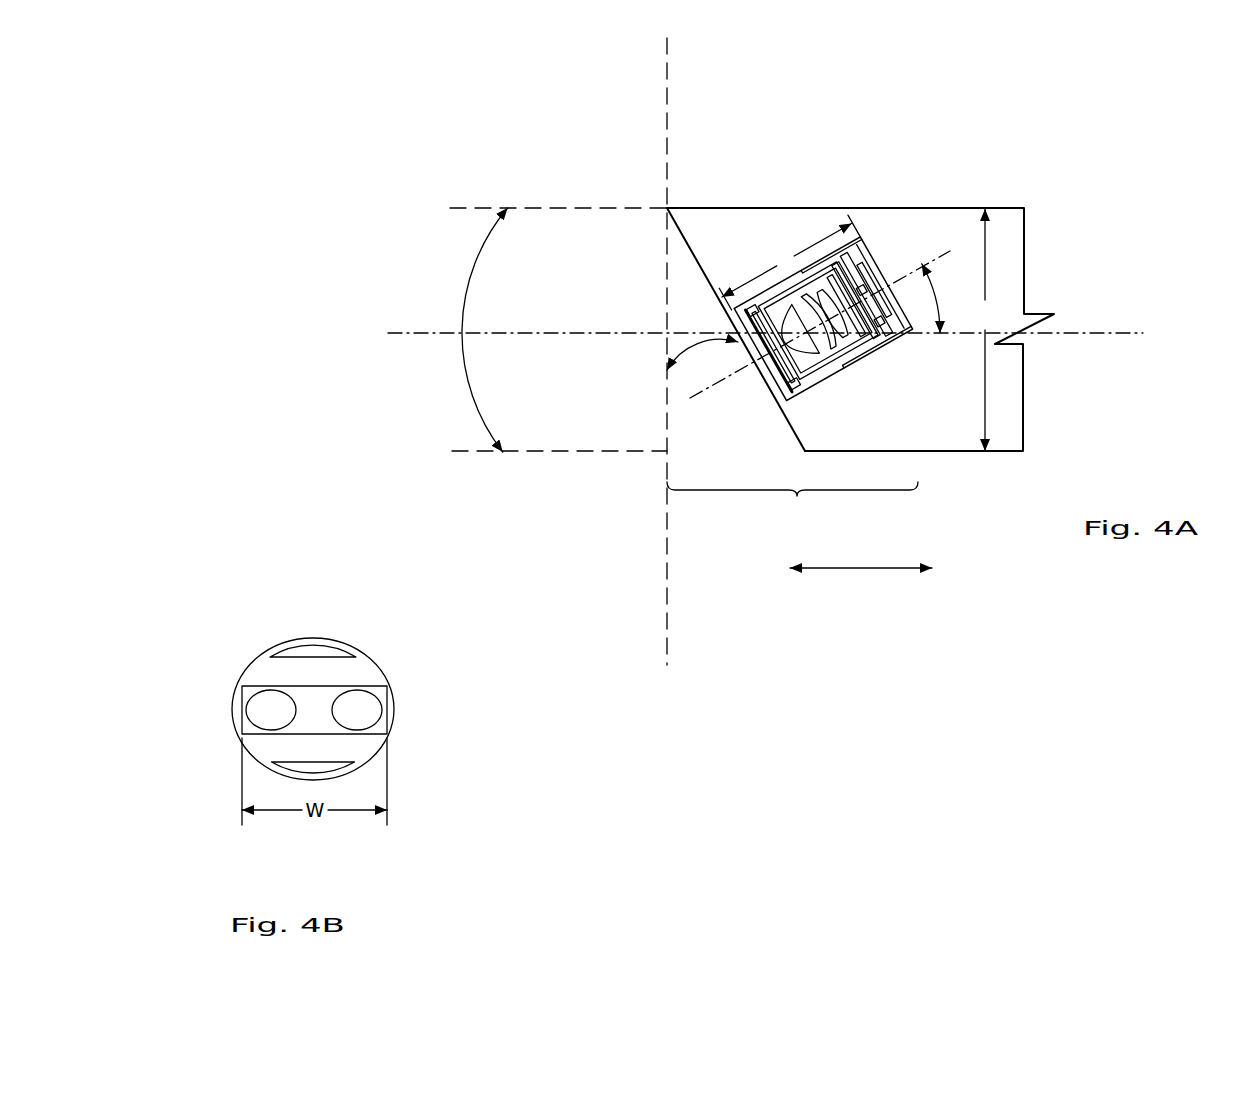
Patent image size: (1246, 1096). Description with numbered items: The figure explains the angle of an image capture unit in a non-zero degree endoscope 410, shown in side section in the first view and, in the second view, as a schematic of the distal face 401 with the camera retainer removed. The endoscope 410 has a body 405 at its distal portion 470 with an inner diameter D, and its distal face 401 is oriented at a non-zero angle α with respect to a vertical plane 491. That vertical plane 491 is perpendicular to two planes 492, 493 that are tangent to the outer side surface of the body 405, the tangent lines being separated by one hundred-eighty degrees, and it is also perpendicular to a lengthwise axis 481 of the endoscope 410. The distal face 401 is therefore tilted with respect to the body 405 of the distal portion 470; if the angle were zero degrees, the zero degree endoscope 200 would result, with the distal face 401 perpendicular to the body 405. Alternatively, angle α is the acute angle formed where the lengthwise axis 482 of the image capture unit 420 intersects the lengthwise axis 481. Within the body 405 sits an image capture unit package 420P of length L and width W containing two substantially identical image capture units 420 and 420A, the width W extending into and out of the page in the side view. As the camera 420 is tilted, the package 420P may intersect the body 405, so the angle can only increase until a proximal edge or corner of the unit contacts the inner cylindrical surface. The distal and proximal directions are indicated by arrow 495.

In FIG. 4A, the zero degree endoscope 200 is at (333, 457).
In FIG. 4A, the distal face 401 is at (687, 329).
In FIG. 4B, the distal face 401 is at (300, 671).
In FIG. 4A, the body 405 is at (860, 300).
In FIG. 4A, the non-zero degree endoscope 410 is at (896, 240).
In FIG. 4A, the image capture unit 420 is at (815, 327).
In FIG. 4B, the image capture unit 420 is at (405, 679).
In FIG. 4B, the image capture unit 420A is at (231, 678).
In FIG. 4B, the image capture unit package 420P is at (331, 639).
In FIG. 4A, the distal portion 470 is at (792, 505).
In FIG. 4A, the lengthwise axis 481 is at (1100, 319).
In FIG. 4A, the lengthwise axis 482 is at (908, 260).
In FIG. 4A, the vertical plane 491 is at (668, 123).
In FIG. 4A, the plane 492 is at (553, 200).
In FIG. 4A, the plane 493 is at (543, 458).
In FIG. 4A, the arrow 495 is at (878, 541).